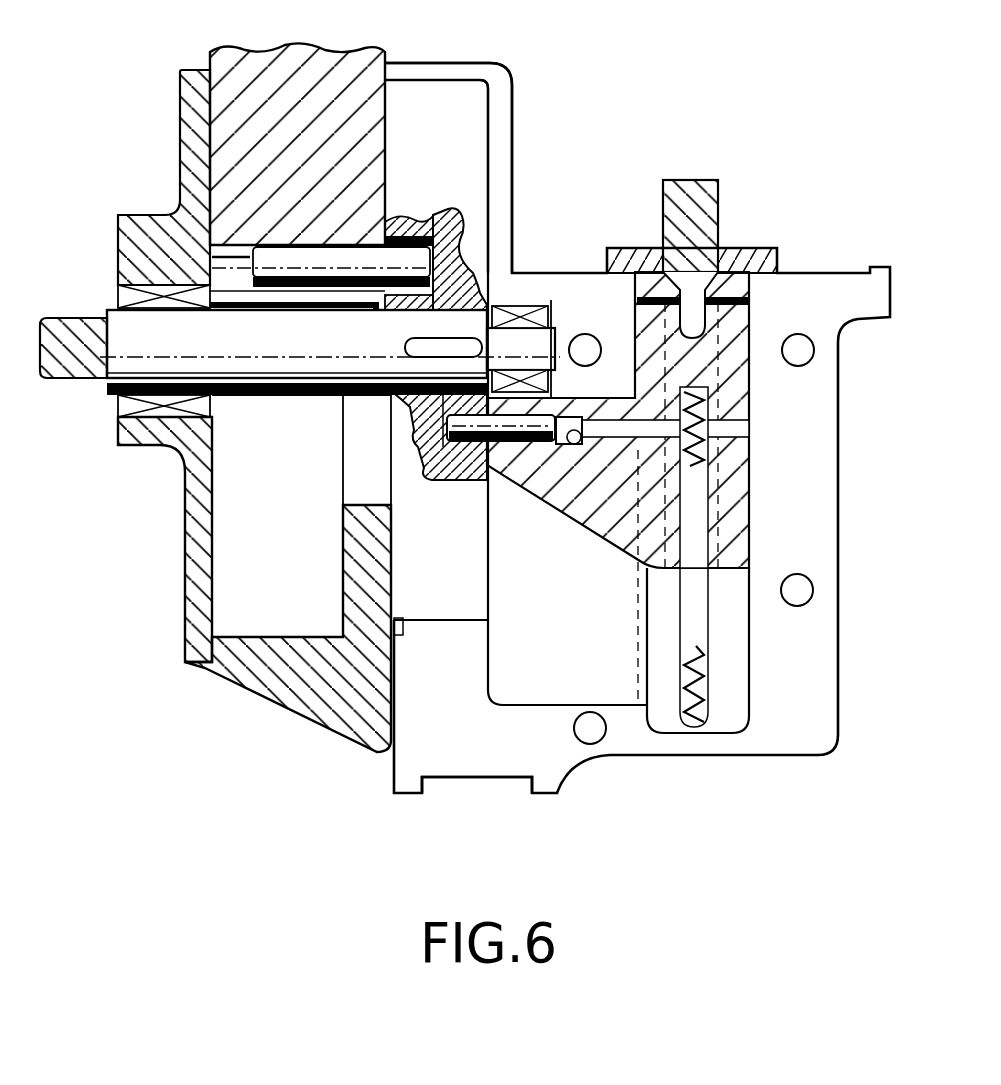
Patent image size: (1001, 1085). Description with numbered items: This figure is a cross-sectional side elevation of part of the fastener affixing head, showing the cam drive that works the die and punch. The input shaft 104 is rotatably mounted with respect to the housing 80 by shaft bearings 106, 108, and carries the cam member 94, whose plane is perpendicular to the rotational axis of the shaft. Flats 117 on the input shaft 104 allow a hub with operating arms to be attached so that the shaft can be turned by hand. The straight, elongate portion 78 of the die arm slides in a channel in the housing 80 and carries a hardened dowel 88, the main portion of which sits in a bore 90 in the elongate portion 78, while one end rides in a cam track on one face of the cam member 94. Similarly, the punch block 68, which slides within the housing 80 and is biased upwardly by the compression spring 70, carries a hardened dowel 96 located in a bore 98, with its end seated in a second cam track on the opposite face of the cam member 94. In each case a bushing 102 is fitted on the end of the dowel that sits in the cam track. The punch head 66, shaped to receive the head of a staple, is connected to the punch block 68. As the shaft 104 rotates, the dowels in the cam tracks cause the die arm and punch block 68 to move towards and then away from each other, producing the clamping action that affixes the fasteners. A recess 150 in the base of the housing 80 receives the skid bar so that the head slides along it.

The punch head 66 is at (718, 218).
The punch block 68 is at (602, 521).
The compression spring 70 is at (715, 690).
The elongate portion 78 is at (360, 66).
The housing 80 is at (815, 665).
The hardened dowel 88 is at (360, 262).
The bore 90 is at (263, 250).
The cam member 94 is at (470, 106).
The hardened dowel 96 is at (527, 465).
The bore 98 is at (583, 441).
The bushing 102 is at (470, 482).
The input shaft 104 is at (268, 353).
The shaft bearing 106 is at (130, 445).
The shaft bearing 108 is at (520, 306).
The flats 117 is at (56, 366).
The recess 150 is at (500, 785).